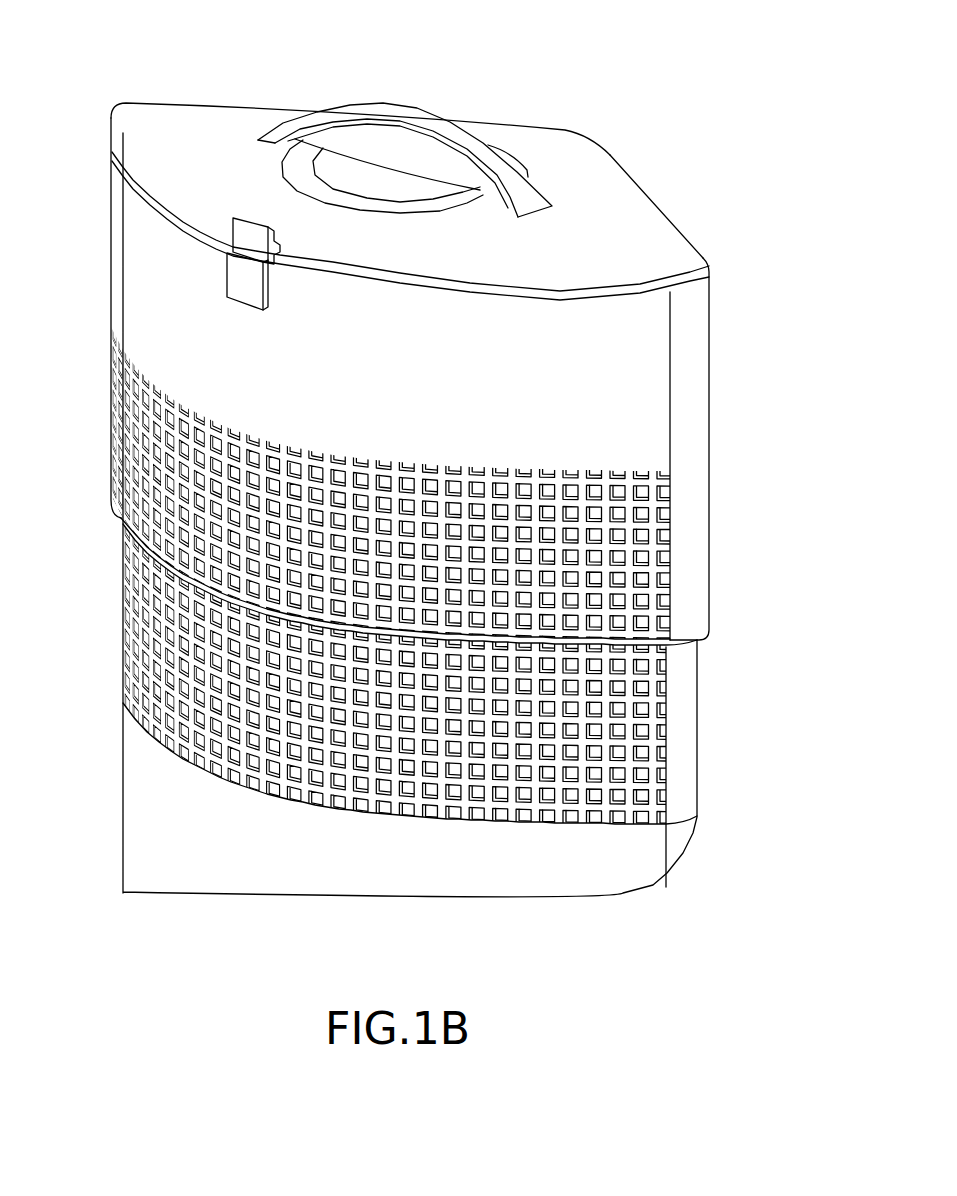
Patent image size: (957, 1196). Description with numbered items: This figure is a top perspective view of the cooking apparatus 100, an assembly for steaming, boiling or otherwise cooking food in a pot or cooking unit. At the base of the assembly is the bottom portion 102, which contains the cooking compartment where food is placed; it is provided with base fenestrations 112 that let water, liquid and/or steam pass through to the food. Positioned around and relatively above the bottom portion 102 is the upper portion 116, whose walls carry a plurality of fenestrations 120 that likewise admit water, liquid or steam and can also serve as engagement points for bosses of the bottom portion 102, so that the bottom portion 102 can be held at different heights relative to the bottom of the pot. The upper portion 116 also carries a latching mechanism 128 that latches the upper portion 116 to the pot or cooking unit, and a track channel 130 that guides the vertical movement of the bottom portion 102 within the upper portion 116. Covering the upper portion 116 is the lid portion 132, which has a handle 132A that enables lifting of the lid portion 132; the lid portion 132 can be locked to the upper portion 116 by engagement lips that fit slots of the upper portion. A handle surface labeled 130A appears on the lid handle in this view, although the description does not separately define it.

The cooking apparatus 100 is at (272, 36).
The bottom portion 102 is at (690, 690).
The base fenestrations 112 is at (642, 758).
The upper portion 116 is at (687, 367).
The fenestrations 120 is at (645, 515).
The latching mechanism 128 is at (238, 282).
The track channel 130 is at (588, 202).
The handle 130A is at (418, 120).
The lid portion 132 is at (650, 233).
The handle 132A is at (363, 100).